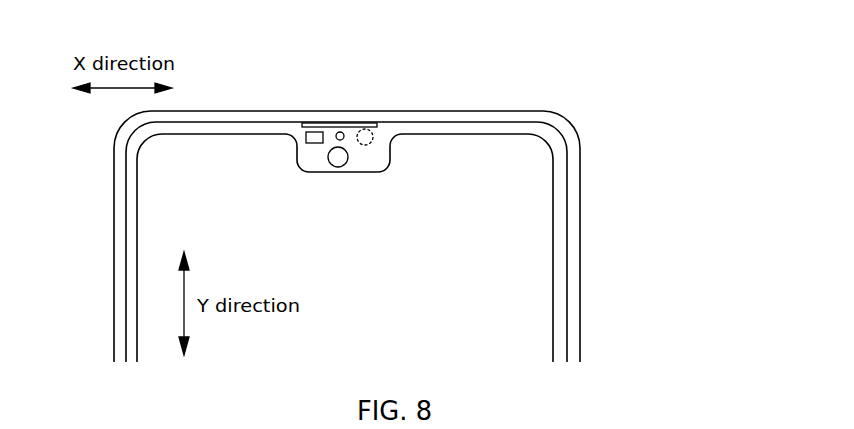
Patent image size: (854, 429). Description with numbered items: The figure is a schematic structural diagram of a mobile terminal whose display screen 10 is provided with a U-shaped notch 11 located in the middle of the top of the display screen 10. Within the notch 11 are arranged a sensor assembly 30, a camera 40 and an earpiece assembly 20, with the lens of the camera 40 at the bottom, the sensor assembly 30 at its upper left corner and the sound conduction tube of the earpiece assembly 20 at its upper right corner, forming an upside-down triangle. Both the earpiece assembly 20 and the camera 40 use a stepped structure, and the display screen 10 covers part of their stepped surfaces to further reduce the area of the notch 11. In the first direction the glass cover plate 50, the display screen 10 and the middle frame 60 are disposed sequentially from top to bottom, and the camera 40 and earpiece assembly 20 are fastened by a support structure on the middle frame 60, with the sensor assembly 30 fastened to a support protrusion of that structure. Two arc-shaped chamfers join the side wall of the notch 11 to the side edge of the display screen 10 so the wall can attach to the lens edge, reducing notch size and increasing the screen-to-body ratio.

The display screen 10 is at (533, 300).
The notch 11 is at (362, 157).
The earpiece assembly 20 is at (367, 129).
The sensor assembly 30 is at (303, 140).
The camera 40 is at (339, 167).
The glass cover plate 50 is at (315, 132).
The middle frame 60 is at (341, 131).